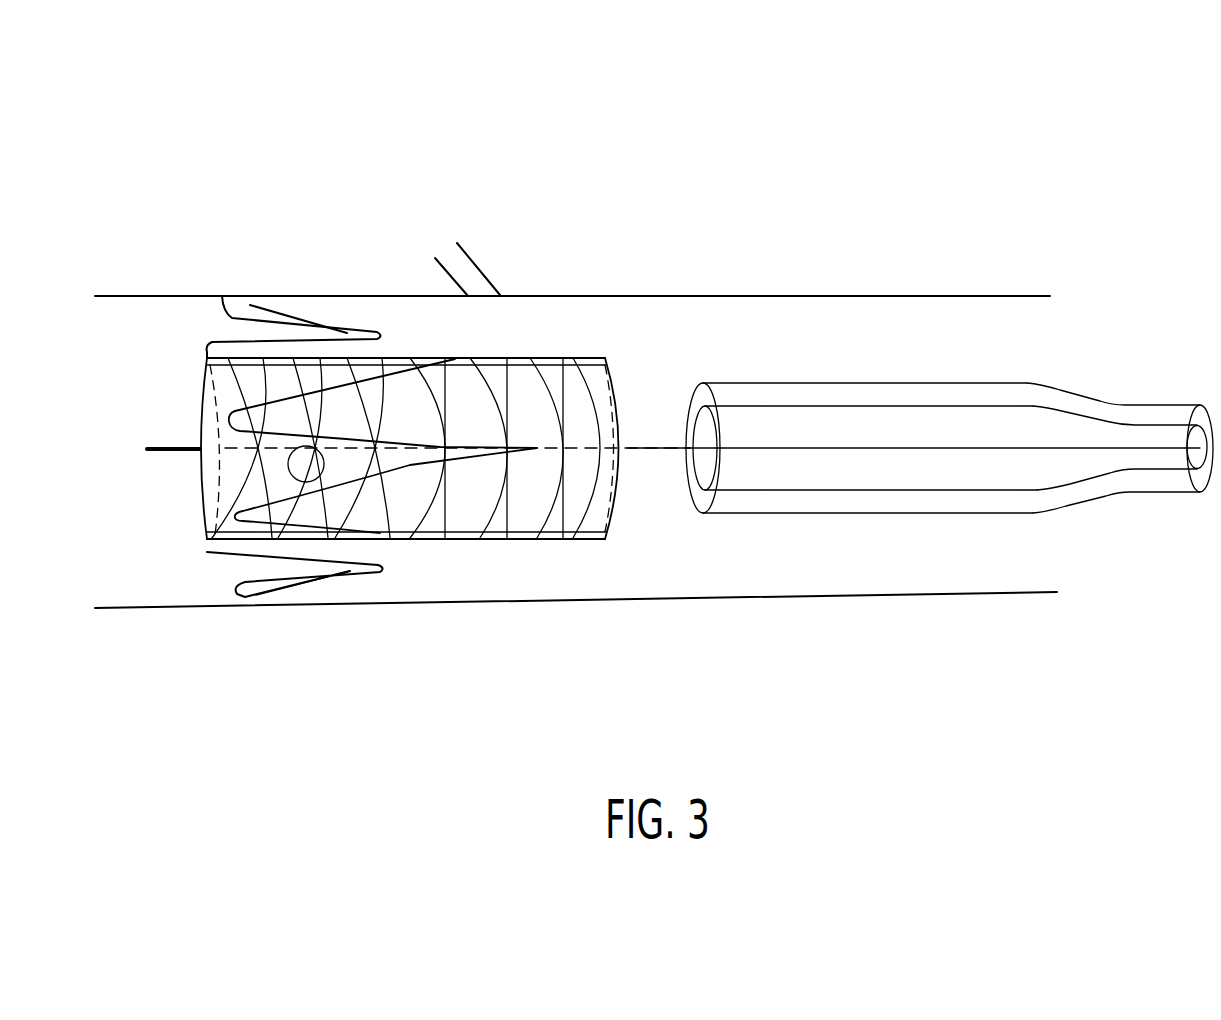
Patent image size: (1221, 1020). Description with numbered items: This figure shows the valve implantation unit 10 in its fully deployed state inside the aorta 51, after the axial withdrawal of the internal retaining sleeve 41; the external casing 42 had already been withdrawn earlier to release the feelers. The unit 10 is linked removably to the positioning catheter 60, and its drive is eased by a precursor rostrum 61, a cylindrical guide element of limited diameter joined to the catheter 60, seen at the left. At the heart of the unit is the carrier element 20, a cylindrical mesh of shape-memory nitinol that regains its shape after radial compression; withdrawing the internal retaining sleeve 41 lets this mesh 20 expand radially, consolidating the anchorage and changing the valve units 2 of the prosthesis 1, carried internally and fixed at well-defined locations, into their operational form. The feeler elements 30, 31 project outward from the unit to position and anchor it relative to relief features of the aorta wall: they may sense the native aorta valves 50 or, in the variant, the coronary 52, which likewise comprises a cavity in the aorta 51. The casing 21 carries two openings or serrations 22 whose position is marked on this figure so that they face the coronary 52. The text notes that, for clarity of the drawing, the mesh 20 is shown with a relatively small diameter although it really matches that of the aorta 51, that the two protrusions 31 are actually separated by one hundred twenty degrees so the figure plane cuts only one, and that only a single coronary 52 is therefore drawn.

The prosthesis 1 is at (428, 522).
The valve units 2 is at (252, 513).
The valve implantation unit 10 is at (723, 188).
The carrier element 20 is at (495, 540).
The casing 21 is at (547, 543).
The openings or serrations 22 is at (492, 356).
The feeler elements 30 is at (525, 355).
The feeler elements 31 is at (288, 310).
The internal retaining sleeve 41 is at (907, 403).
The external casing 42 is at (983, 383).
The native aorta valves 50 is at (222, 296).
The aorta 51 is at (154, 297).
The coronary 52 is at (468, 252).
The positioning catheter 60 is at (1118, 448).
The precursor rostrum 61 is at (148, 455).